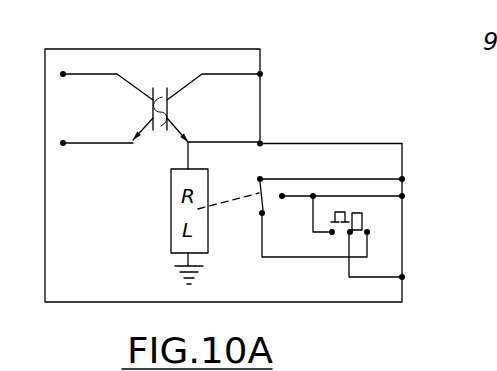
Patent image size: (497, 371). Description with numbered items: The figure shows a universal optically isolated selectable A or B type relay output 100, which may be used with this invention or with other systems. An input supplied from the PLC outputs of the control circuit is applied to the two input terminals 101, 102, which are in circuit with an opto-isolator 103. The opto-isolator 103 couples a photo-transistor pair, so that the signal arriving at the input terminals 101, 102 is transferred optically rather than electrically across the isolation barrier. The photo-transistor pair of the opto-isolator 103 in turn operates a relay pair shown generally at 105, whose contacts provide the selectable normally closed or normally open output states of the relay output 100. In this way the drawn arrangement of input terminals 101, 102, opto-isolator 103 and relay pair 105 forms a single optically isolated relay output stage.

The universal optically isolated selectable A,B type relay output 100 is at (297, 115).
The input terminal 101 is at (63, 74).
The input terminal 102 is at (63, 143).
The opto-isolator 103 is at (164, 74).
The relay pair 105 is at (364, 149).